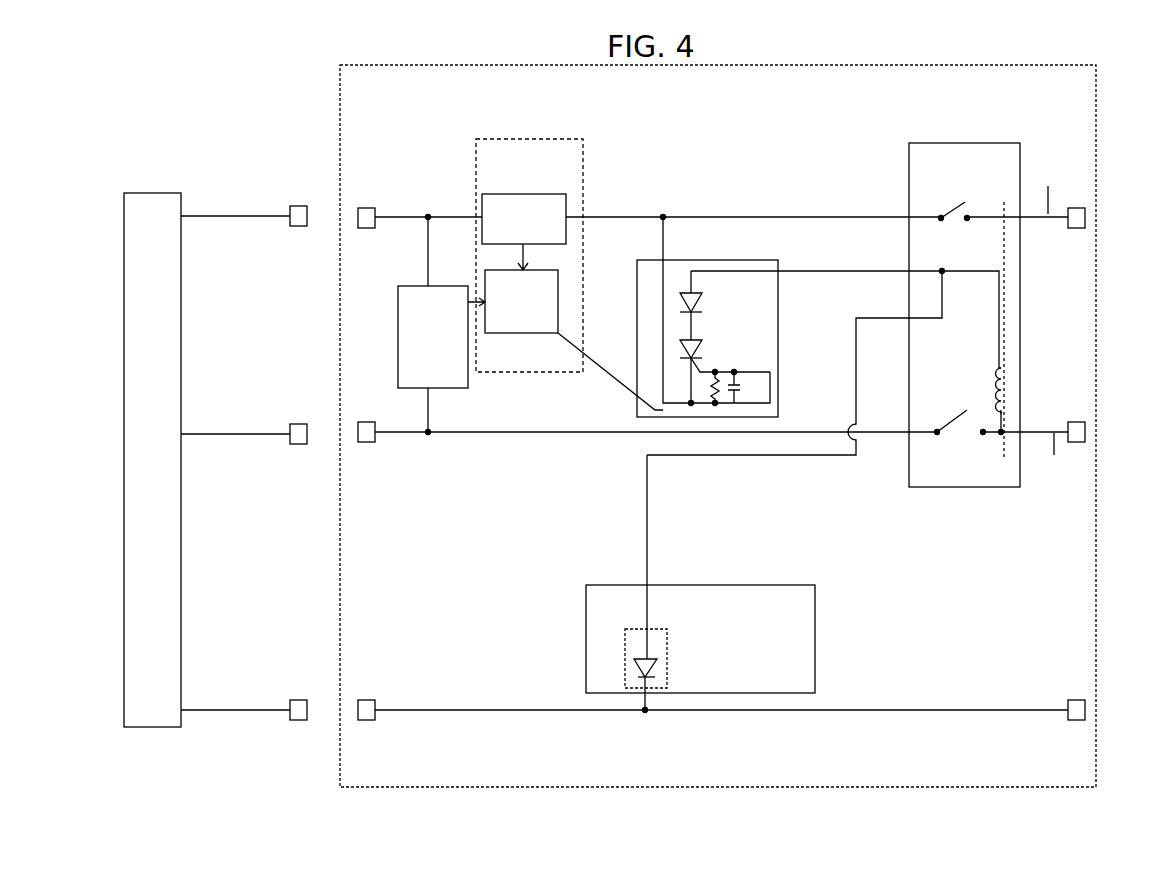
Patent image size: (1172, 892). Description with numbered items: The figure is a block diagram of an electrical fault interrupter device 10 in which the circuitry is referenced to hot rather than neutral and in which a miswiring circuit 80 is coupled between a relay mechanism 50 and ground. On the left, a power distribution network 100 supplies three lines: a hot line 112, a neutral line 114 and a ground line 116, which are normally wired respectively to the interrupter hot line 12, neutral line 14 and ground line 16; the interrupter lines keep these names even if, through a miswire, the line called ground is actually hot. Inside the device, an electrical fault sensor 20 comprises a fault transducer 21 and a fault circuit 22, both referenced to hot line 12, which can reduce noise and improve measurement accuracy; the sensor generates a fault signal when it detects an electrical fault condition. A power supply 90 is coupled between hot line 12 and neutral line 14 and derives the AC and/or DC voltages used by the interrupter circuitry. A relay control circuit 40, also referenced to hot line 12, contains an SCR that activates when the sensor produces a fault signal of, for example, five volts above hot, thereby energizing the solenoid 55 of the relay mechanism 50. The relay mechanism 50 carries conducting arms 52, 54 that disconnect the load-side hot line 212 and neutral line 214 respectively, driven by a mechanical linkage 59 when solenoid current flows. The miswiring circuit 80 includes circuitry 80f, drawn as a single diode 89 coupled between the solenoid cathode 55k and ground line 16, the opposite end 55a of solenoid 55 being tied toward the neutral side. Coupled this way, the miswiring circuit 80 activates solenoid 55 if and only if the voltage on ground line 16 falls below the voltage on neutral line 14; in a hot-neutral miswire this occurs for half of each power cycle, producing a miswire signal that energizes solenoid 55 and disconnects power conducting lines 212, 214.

The electrical fault interrupter device 10 is at (540, 789).
The power distribution network 100 is at (152, 460).
The hot line 112 is at (206, 216).
The neutral line 114 is at (210, 434).
The ground line 116 is at (212, 710).
The hot line 12 is at (452, 217).
The neutral line 14 is at (462, 432).
The ground line 16 is at (413, 710).
The electrical fault sensor 20 is at (492, 139).
The fault transducer 21 is at (524, 219).
The fault circuit 22 is at (521, 288).
The power supply 90 is at (441, 324).
The relay control circuit 40 is at (751, 336).
The relay mechanism 50 is at (997, 315).
The conducting arm 52 is at (962, 203).
The conducting arm 54 is at (958, 414).
The solenoid 55 is at (1003, 392).
The solenoid cathode 55k is at (1003, 370).
The relay coil second end 55a is at (1003, 415).
The mechanical linkage 59 is at (1002, 253).
The miswiring circuit 80 is at (667, 582).
The miswiring circuitry 80f is at (625, 648).
The diode 89 is at (658, 672).
The hot line 212 is at (1051, 192).
The neutral line 214 is at (1068, 456).